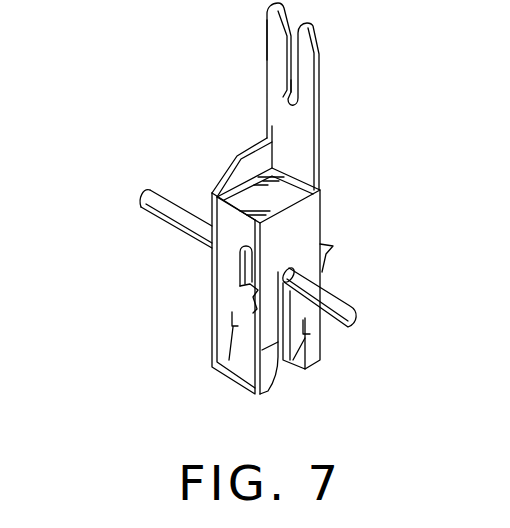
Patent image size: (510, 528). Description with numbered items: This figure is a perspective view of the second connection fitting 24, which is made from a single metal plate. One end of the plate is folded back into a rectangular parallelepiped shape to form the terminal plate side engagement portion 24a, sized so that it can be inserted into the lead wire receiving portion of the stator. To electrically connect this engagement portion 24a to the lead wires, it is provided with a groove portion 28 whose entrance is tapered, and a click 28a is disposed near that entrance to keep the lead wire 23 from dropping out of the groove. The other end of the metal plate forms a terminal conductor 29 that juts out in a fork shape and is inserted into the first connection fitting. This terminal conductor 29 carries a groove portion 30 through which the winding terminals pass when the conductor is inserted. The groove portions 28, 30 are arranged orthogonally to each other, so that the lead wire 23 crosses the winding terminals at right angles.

The lead wire 23 is at (140, 203).
The second connection fitting 24 is at (320, 100).
The terminal plate side engagement portion 24a is at (305, 222).
The groove portion 28 is at (288, 372).
The click 28a is at (275, 345).
The terminal conductor 29 is at (273, 43).
The groove portion 30 is at (284, 97).